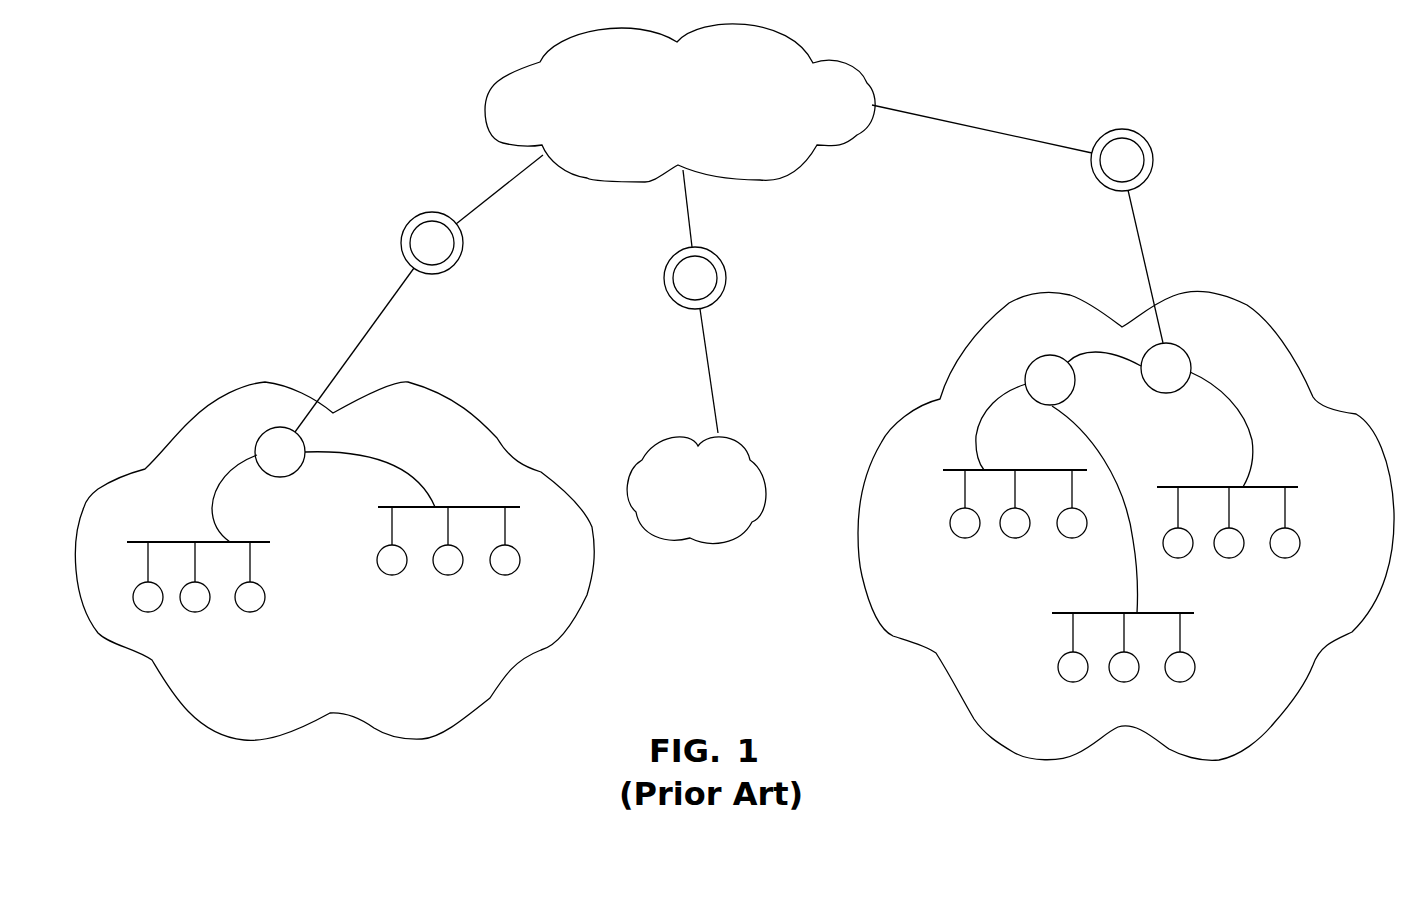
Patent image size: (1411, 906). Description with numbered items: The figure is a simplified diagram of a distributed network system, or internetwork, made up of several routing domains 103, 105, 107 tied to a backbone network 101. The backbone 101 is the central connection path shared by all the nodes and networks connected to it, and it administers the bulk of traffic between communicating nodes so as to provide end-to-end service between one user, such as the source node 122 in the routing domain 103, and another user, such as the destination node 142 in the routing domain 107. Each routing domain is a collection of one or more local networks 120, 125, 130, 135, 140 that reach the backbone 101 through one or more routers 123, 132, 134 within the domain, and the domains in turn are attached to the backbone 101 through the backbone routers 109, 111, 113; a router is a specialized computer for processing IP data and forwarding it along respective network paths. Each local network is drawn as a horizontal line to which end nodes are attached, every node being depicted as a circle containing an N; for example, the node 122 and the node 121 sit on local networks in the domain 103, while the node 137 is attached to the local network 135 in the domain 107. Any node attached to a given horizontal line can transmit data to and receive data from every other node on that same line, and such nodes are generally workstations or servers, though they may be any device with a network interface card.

The backbone network 101 is at (657, 129).
The routing domain 103 is at (347, 679).
The routing domain 105 is at (675, 514).
The routing domain 107 is at (950, 621).
The router 109 is at (401, 243).
The router 111 is at (727, 278).
The router 113 is at (1118, 129).
The local network 120 is at (147, 542).
The node 121 is at (519, 557).
The source node 122 is at (261, 602).
The router 123 is at (297, 470).
The local network 125 is at (503, 507).
The local network 130 is at (1068, 468).
The router 132 is at (1046, 356).
The router 134 is at (1187, 351).
The local network 135 is at (1282, 487).
The node 137 is at (1299, 541).
The local network 140 is at (1108, 613).
The destination node 142 is at (1190, 675).